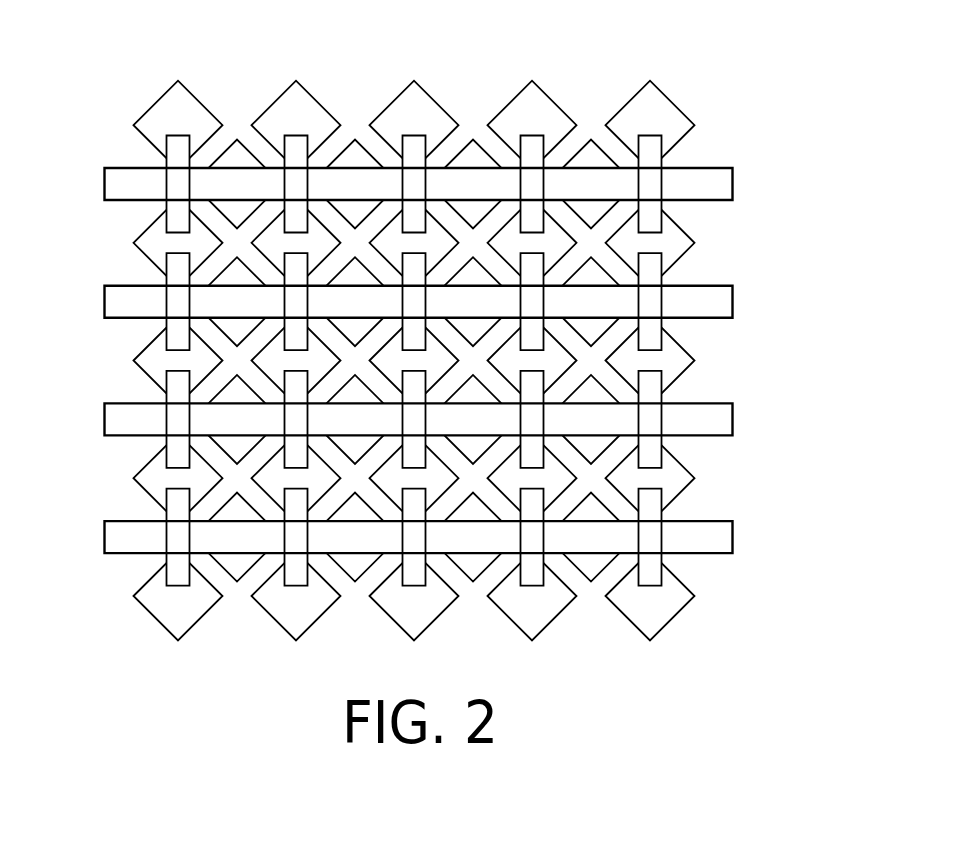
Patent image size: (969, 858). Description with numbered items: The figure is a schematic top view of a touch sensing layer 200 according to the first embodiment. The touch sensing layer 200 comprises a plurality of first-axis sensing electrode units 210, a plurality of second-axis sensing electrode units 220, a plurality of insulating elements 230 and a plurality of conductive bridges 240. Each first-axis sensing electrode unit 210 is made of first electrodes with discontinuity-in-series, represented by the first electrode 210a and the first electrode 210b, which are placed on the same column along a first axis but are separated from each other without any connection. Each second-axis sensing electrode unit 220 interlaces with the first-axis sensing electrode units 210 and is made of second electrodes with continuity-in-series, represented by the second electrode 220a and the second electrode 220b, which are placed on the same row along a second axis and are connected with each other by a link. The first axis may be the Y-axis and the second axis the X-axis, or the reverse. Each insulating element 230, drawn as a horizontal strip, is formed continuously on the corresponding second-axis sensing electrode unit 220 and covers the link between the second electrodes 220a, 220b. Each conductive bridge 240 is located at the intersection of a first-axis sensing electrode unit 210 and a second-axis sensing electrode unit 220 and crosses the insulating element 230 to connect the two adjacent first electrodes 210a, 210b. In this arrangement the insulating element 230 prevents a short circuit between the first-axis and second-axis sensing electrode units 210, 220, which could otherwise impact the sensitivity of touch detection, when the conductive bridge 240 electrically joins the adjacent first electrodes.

The touch sensing layer 200 is at (441, 385).
The first-axis sensing electrode unit 210 is at (647, 613).
The first electrode 210a is at (523, 100).
The first electrode 210b is at (548, 243).
The second-axis sensing electrode unit 220 is at (238, 157).
The second electrode 220a is at (480, 157).
The second electrode 220b is at (605, 153).
The insulating element 230 is at (716, 185).
The conductive bridge 240 is at (171, 146).